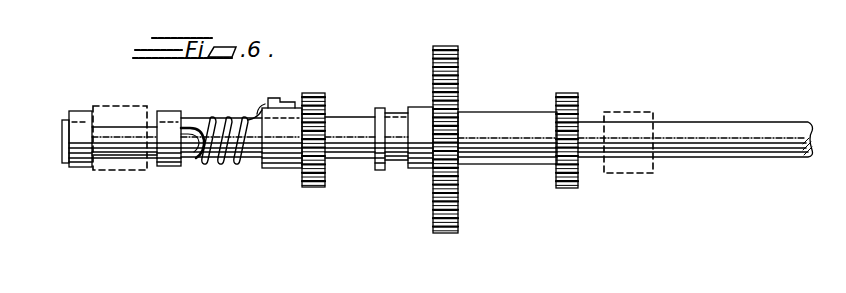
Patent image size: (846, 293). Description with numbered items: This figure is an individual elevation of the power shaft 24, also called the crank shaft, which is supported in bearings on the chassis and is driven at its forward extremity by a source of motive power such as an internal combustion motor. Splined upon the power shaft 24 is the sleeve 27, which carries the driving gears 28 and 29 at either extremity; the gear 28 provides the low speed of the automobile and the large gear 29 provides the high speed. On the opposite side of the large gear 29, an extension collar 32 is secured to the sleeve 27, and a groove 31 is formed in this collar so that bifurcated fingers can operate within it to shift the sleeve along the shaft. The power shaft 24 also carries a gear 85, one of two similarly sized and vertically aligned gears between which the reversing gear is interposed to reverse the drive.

The power shaft 24 is at (695, 127).
The sleeve 27 is at (482, 118).
The driving gear 28 is at (563, 100).
The driving gear 29 is at (443, 57).
The groove 31 is at (384, 112).
The extension collar 32 is at (418, 113).
The gear 85 is at (313, 98).